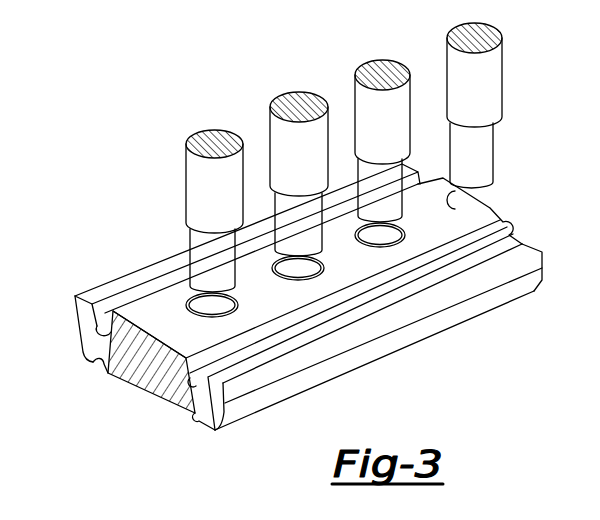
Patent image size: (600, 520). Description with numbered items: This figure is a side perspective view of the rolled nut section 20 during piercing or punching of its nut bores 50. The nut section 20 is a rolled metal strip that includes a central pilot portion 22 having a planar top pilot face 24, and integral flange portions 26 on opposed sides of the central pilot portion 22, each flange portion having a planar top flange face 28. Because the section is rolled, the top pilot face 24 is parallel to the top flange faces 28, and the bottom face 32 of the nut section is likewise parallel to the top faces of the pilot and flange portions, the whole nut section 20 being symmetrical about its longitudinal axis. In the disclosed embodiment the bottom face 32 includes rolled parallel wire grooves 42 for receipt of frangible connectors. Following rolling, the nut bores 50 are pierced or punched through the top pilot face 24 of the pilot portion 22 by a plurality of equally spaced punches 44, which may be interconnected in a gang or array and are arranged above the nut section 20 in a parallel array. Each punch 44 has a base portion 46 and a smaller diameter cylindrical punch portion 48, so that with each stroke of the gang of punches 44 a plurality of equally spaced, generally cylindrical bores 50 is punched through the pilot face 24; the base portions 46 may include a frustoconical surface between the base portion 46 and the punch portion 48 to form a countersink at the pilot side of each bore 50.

The nut section 20 is at (287, 249).
The central pilot portion 22 is at (315, 319).
The top pilot face 24 is at (148, 312).
The flange portions 26 is at (400, 321).
The top flange face 28 is at (527, 245).
The bottom face 32 is at (158, 400).
The wire grooves 42 is at (106, 364).
The punches 44 is at (339, 157).
The base portion 46 is at (189, 184).
The punch portion 48 is at (499, 138).
The nut bores 50 is at (379, 236).